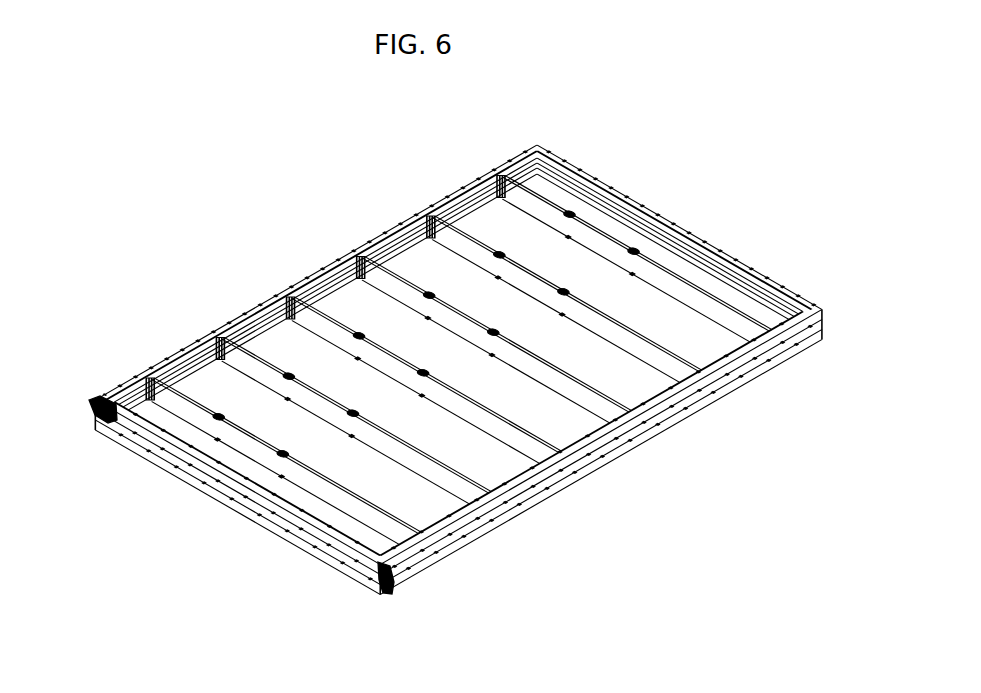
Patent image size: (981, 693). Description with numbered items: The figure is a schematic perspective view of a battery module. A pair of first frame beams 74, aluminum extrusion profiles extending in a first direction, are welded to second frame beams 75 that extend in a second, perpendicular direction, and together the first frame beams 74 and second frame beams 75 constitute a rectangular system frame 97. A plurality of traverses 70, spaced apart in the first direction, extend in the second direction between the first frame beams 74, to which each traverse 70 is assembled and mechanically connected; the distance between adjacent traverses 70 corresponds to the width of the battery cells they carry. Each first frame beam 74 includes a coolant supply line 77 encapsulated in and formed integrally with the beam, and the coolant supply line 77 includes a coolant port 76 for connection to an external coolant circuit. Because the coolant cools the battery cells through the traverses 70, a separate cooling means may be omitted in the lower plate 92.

The traverse 70 is at (262, 366).
The first frame beam 74 is at (433, 206).
The second frame beam 75 is at (688, 250).
The coolant port 76 is at (97, 421).
The coolant supply line 77 is at (93, 407).
The lower plate 92 is at (213, 387).
The system frame 97 is at (684, 442).